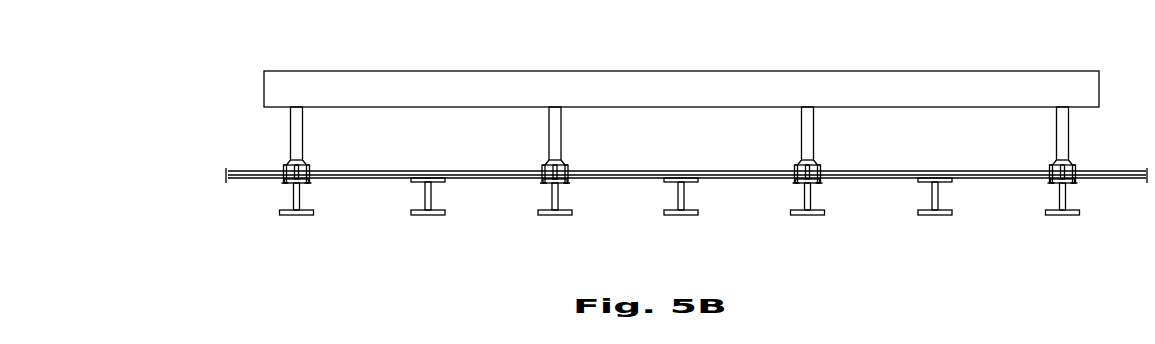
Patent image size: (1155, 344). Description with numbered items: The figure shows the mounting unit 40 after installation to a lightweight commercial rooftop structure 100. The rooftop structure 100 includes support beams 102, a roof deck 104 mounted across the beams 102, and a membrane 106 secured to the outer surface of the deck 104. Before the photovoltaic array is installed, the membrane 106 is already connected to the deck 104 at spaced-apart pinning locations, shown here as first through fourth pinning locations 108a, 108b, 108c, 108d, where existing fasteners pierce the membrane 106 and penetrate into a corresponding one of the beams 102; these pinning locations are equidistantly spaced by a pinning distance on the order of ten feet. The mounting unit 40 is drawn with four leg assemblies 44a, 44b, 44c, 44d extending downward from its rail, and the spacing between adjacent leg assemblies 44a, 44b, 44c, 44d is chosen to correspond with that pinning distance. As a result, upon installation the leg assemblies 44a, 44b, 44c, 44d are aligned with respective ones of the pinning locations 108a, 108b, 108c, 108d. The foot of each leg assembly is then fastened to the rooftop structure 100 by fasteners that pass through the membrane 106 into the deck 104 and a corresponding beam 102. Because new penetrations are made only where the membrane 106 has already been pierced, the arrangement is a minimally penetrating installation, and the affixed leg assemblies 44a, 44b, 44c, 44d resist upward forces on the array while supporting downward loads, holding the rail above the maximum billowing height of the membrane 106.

The mounting unit 40 is at (698, 60).
The rooftop structure 100 is at (207, 172).
The support beams 102 is at (295, 218).
The roof deck 104 is at (384, 181).
The membrane 106 is at (444, 167).
The first leg assembly 44a is at (307, 122).
The second leg assembly 44b is at (565, 122).
The third leg assembly 44c is at (818, 122).
The fourth leg assembly 44d is at (1073, 121).
The first pinning location 108a is at (289, 185).
The second pinning location 108b is at (549, 185).
The third pinning location 108c is at (801, 185).
The fourth pinning location 108d is at (1056, 185).